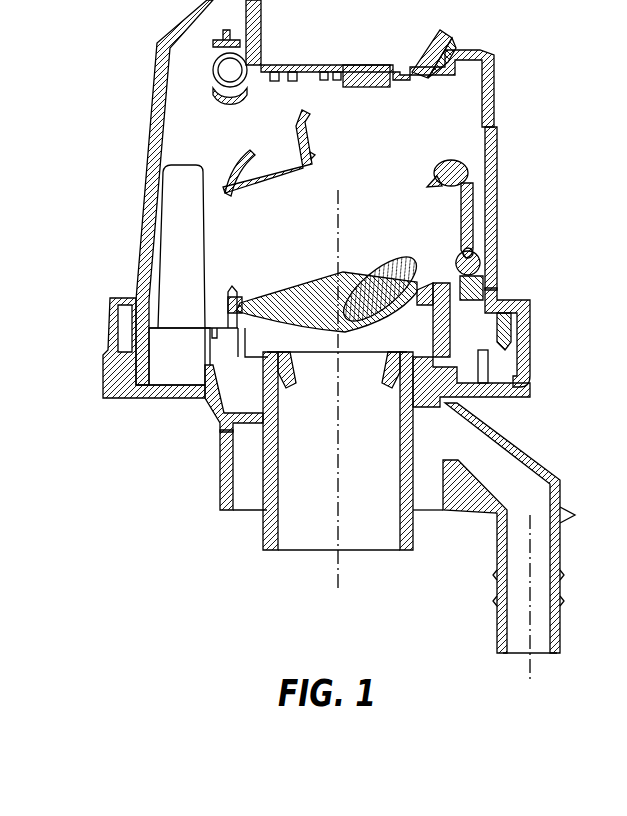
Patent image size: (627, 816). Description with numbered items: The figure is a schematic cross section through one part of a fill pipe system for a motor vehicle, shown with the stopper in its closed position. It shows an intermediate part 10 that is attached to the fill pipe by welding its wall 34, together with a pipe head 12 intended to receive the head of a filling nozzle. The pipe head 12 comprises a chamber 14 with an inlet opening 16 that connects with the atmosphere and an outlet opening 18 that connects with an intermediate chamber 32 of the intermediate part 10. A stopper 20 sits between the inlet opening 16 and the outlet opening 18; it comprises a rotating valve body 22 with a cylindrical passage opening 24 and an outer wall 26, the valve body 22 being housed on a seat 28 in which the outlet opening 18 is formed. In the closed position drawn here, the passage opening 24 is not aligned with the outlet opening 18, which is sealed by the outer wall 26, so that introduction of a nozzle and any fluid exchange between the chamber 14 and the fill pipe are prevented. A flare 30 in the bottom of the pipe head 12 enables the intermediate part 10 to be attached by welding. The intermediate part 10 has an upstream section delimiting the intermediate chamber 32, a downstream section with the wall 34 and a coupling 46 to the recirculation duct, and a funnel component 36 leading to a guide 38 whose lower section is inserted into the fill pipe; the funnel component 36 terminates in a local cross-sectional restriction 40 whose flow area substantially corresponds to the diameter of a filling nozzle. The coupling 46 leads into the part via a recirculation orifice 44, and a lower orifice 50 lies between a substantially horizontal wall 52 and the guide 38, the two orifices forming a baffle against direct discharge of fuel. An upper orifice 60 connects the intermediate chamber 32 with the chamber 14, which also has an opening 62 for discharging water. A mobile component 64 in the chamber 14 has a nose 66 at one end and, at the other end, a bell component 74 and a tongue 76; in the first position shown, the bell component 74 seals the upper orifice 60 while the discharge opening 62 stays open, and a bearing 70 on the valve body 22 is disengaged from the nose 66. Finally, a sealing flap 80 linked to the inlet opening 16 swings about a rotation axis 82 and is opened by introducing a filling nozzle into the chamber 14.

The intermediate part 10 is at (208, 418).
The pipe head 12 is at (148, 131).
The chamber 14 is at (409, 136).
The inlet opening 16 is at (264, 56).
The outlet opening 18 is at (262, 308).
The stopper 20 is at (278, 185).
The rotating valve body 22 is at (376, 276).
The cylindrical passage opening 24 is at (236, 214).
The outer wall 26 is at (352, 334).
The seat 28 is at (230, 288).
The flare 30 is at (104, 354).
The intermediate chamber 32 is at (184, 373).
The wall 34 is at (232, 512).
The funnel component 36 is at (392, 364).
The guide 38 is at (279, 541).
The local cross-sectional restriction 40 is at (391, 377).
The recirculation orifice 44 is at (466, 455).
The pipe section / coupling 46 is at (499, 626).
The lower orifice 50 is at (270, 423).
The substantially horizontal wall 52 is at (244, 426).
The upper orifice 60 is at (477, 342).
The water-discharge opening 62 is at (500, 292).
The mobile component 64 is at (474, 221).
The nose 66 is at (435, 173).
The bearing 70 is at (423, 288).
The bell component 74 is at (484, 278).
The tongue 76 is at (482, 258).
The sealing flap 80 is at (352, 64).
The rotation axis 82 is at (236, 66).